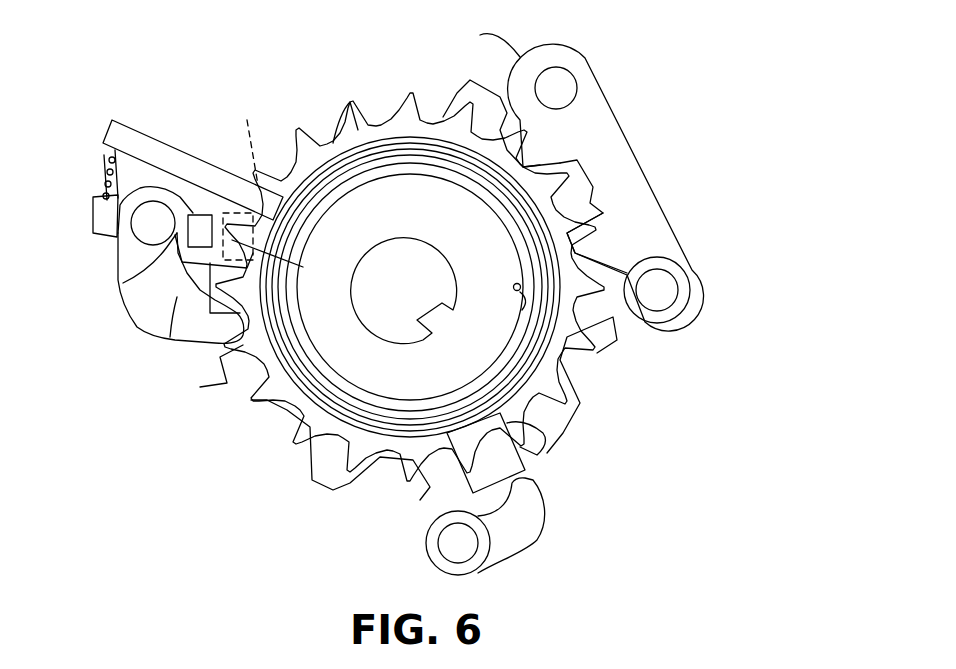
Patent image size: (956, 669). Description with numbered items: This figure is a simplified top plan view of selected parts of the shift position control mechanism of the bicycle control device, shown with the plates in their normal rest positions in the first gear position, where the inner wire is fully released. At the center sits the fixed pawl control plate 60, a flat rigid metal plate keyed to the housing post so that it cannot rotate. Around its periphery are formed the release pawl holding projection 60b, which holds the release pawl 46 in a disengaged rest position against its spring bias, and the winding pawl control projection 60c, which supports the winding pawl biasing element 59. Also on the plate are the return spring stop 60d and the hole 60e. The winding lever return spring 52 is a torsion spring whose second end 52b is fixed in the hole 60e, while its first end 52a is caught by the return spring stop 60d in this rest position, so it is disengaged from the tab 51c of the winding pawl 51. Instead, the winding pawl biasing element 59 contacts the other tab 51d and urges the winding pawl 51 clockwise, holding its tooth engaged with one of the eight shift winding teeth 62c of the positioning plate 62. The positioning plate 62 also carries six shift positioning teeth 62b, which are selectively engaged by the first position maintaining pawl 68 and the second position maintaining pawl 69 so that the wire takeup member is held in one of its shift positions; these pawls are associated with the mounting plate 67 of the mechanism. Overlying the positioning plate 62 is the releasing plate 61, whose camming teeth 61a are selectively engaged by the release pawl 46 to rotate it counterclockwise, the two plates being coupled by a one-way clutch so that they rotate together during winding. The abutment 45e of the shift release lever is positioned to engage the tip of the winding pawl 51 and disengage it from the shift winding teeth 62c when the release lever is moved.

The abutment 45e is at (251, 175).
The release pawl 46 is at (545, 522).
The winding pawl 51 is at (140, 333).
The biasing tab 51c is at (203, 225).
The biasing tab 51d is at (100, 213).
The winding lever return spring 52 is at (368, 197).
The first end of the winding lever return spring 52a is at (123, 283).
The second end of the winding lever return spring 52b is at (520, 297).
The winding pawl biasing element 59 is at (105, 175).
The pawl control plate 60 is at (272, 352).
The release pawl holding projection 60b is at (525, 458).
The winding pawl control projection 60c is at (133, 120).
The return spring stop 60d is at (303, 267).
The hole 60e is at (512, 286).
The releasing plate 61 is at (322, 492).
The camming teeth 61a is at (468, 100).
The positioning plate 62 is at (228, 368).
The shift positioning teeth 62b is at (598, 212).
The shift winding teeth 62c is at (345, 100).
The mounting plate 67 is at (628, 135).
The first position maintaining pawl 68 is at (488, 36).
The second position maintaining pawl 69 is at (667, 323).